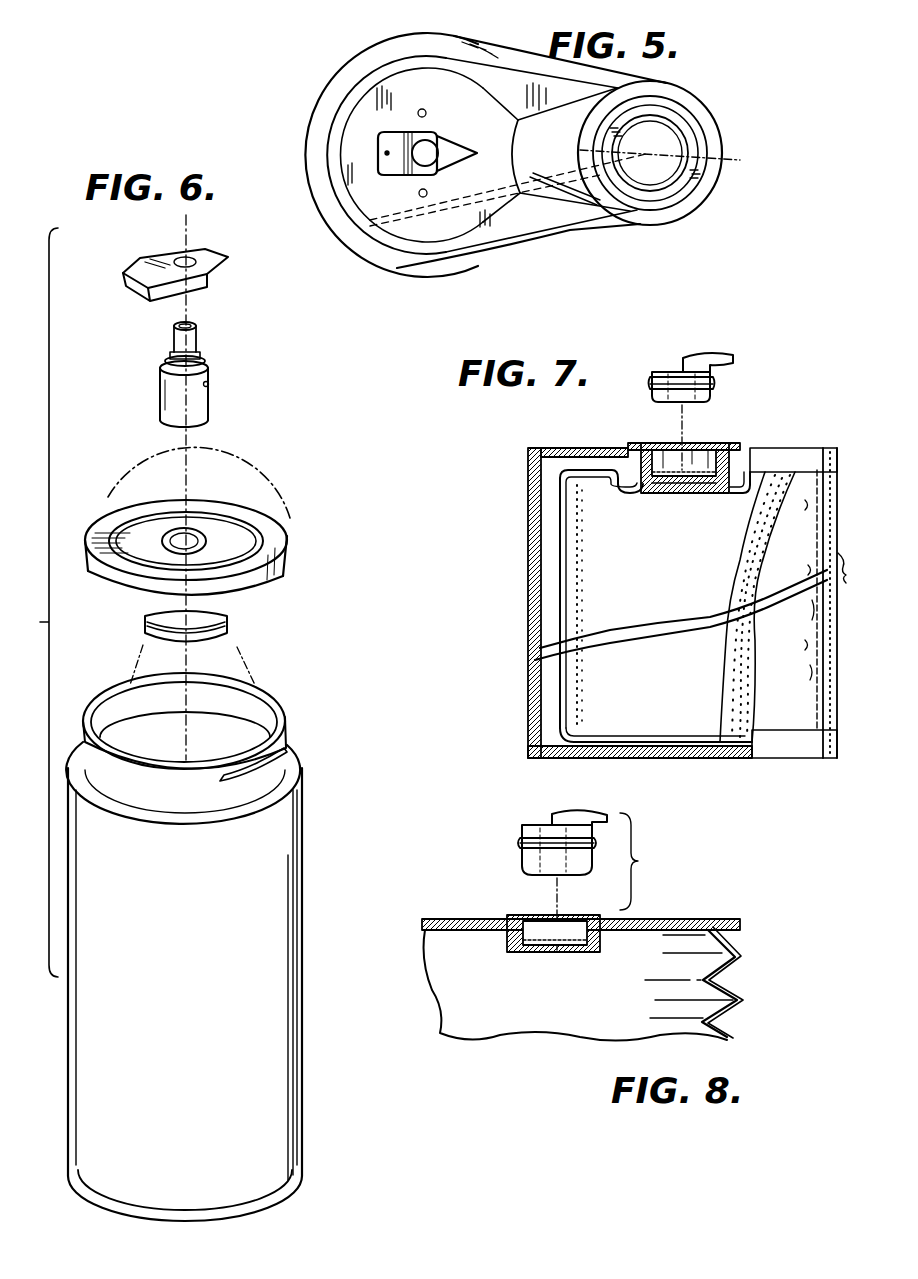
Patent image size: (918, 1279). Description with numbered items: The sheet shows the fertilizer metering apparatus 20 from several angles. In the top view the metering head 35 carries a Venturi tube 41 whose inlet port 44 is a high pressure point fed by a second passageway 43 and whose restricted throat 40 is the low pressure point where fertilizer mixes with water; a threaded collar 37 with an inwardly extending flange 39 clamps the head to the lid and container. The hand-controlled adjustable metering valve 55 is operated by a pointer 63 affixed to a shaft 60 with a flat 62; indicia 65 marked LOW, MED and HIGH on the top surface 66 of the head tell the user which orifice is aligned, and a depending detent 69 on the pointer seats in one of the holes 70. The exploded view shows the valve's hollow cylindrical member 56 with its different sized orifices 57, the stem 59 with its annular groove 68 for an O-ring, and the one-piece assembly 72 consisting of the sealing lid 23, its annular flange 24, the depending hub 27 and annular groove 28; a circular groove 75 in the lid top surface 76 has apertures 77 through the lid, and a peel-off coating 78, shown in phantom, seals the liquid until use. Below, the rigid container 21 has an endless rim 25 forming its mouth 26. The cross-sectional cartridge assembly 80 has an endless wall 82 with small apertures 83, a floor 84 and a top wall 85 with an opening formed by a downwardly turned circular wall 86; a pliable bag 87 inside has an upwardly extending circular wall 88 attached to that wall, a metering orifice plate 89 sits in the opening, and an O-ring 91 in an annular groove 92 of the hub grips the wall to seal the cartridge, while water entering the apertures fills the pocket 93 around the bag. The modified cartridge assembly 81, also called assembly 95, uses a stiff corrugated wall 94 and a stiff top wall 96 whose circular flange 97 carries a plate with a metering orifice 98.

In FIG. 5, the apparatus 20 is at (386, 294).
In FIG. 6, the apparatus 20 is at (32, 602).
In FIG. 7, the apparatus 20 is at (684, 472).
In FIG. 6, the rigid container 21 is at (303, 881).
In FIG. 6, the sealing lid 23 is at (118, 598).
In FIG. 7, the sealing lid 23 is at (700, 355).
In FIG. 8, the sealing lid 23 is at (594, 820).
In FIG. 6, the annular flange 24 is at (108, 531).
In FIG. 6, the endless rim 25 is at (273, 697).
In FIG. 6, the mouth 26 is at (240, 736).
In FIG. 6, the hub 27 is at (160, 632).
In FIG. 7, the hub 27 is at (652, 372).
In FIG. 8, the hub 27 is at (535, 830).
In FIG. 6, the annular groove 28 is at (230, 630).
In FIG. 5, the metering head 35 is at (476, 86).
In FIG. 5, the threaded collar 37 is at (334, 232).
In FIG. 5, the inwardly extending flange 39 is at (329, 200).
In FIG. 5, the restricted throat 40 is at (710, 160).
In FIG. 5, the Venturi tube 41 is at (680, 234).
In FIG. 5, the second passageway 43 is at (353, 256).
In FIG. 5, the inlet port 44 is at (655, 153).
In FIG. 5, the adjustable metering valve 55 is at (368, 156).
In FIG. 6, the adjustable metering valve 55 is at (140, 336).
In FIG. 6, the hollow cylindrical member 56 is at (190, 403).
In FIG. 6, the orifices 57 is at (209, 385).
In FIG. 6, the stem 59 is at (206, 360).
In FIG. 5, the shaft 60 is at (440, 148).
In FIG. 6, the shaft 60 is at (196, 330).
In FIG. 5, the flat 62 is at (404, 140).
In FIG. 6, the flat 62 is at (172, 346).
In FIG. 5, the pointer 63 is at (437, 158).
In FIG. 6, the pointer 63 is at (150, 262).
In FIG. 5, the indicia 65 is at (437, 77).
In FIG. 5, the top surface 66 is at (387, 206).
In FIG. 6, the annular groove 68 is at (201, 352).
In FIG. 5, the detent 69 is at (468, 165).
In FIG. 6, the detent 69 is at (221, 266).
In FIG. 5, the holes 70 is at (366, 282).
In FIG. 6, the assembly 72 is at (250, 648).
In FIG. 6, the circular groove 75 is at (225, 518).
In FIG. 6, the top surface 76 is at (229, 538).
In FIG. 6, the apertures 77 is at (262, 556).
In FIG. 6, the peel-off coating 78 is at (276, 462).
In FIG. 7, the cartridge assembly 80 is at (496, 483).
In FIG. 8, the cartridge assembly 81 is at (458, 1051).
In FIG. 7, the endless wall 82 is at (560, 548).
In FIG. 7, the small apertures 83 is at (528, 575).
In FIG. 7, the floor 84 is at (672, 758).
In FIG. 7, the top wall 85 is at (603, 440).
In FIG. 7, the circular wall 86 is at (648, 493).
In FIG. 7, the pliable bag 87 is at (560, 618).
In FIG. 7, the circular wall 88 is at (742, 494).
In FIG. 7, the metering orifice plate 89 is at (708, 446).
In FIG. 7, the O-ring 91 is at (712, 385).
In FIG. 8, the O-ring 91 is at (520, 843).
In FIG. 7, the annular groove 92 is at (670, 377).
In FIG. 8, the annular groove 92 is at (536, 858).
In FIG. 7, the pocket 93 is at (548, 505).
In FIG. 8, the stiff wall 94 is at (732, 992).
In FIG. 8, the cartridge assembly 95 is at (748, 949).
In FIG. 8, the stiff top wall 96 is at (698, 912).
In FIG. 8, the circular flange 97 is at (600, 952).
In FIG. 8, the metering orifice 98 is at (550, 960).